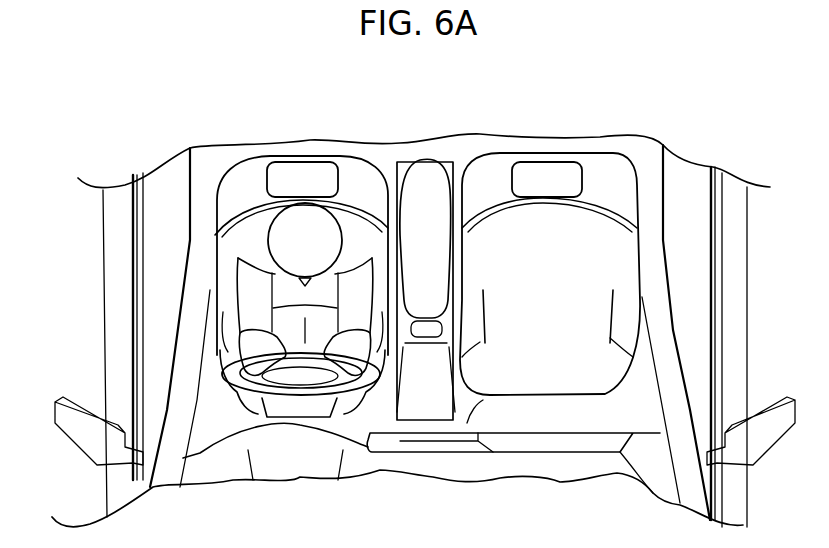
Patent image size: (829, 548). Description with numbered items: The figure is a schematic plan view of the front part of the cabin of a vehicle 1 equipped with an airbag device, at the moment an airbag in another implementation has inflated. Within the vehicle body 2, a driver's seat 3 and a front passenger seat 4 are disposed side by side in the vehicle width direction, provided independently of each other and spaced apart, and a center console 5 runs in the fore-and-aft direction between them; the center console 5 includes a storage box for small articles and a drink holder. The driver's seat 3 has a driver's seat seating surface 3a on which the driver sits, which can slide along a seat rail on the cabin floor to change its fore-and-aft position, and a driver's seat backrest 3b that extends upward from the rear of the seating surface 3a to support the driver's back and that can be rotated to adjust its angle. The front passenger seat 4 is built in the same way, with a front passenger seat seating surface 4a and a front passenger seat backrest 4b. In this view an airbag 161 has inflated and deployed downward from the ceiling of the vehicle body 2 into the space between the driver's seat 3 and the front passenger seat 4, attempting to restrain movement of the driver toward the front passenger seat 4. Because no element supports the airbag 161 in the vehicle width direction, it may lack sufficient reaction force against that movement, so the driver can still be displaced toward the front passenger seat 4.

The vehicle 1 is at (98, 263).
The vehicle body 2 is at (112, 297).
The driver's seat 3 is at (224, 247).
The driver's seat seating surface 3a is at (230, 331).
The driver's seat backrest 3b is at (255, 175).
The front passenger seat 4 is at (625, 250).
The front passenger seat seating surface 4a is at (625, 328).
The front passenger seat backrest 4b is at (595, 178).
The center console 5 is at (513, 291).
The airbag 161 is at (427, 173).